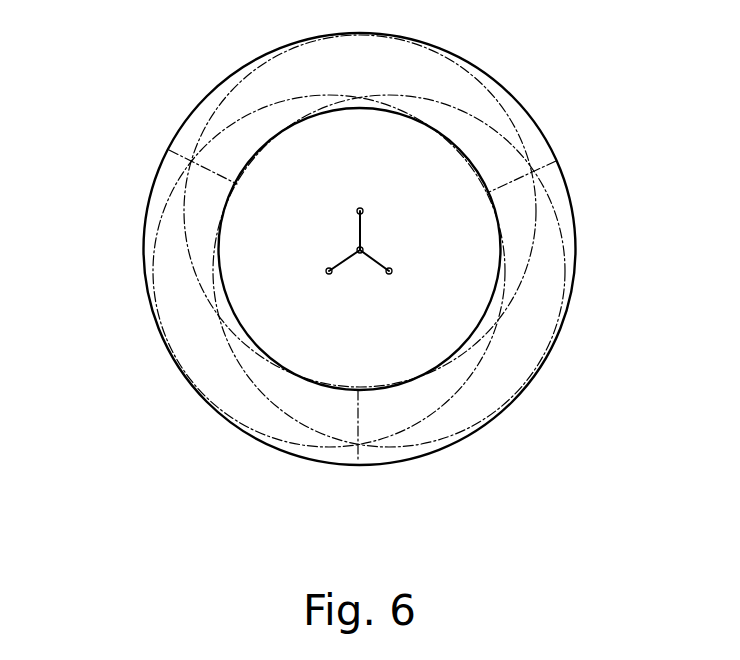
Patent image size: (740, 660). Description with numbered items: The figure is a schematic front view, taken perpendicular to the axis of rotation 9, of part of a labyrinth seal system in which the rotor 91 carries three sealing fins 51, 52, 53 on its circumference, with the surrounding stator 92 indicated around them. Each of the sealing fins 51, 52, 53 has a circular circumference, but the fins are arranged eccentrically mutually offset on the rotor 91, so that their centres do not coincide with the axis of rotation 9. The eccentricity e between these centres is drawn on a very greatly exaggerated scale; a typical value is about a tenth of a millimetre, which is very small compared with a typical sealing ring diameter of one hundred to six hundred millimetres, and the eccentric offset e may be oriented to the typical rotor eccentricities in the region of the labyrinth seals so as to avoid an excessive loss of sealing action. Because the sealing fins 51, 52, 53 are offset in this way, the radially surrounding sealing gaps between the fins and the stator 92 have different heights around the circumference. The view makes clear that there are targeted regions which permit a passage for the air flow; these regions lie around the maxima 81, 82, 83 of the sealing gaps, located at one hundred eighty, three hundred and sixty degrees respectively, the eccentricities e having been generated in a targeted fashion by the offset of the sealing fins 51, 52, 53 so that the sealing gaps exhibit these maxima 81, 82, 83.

The sealing fin 51 is at (360, 235).
The sealing fin 52 is at (566, 234).
The sealing fin 53 is at (156, 230).
The maximum of sealing gap 81 is at (357, 425).
The maximum of sealing gap 82 is at (540, 165).
The maximum of sealing gap 83 is at (183, 157).
The axis of rotation 9 is at (373, 253).
The rotor 91 is at (367, 112).
The stator 92 is at (221, 83).
The eccentricity e is at (361, 232).